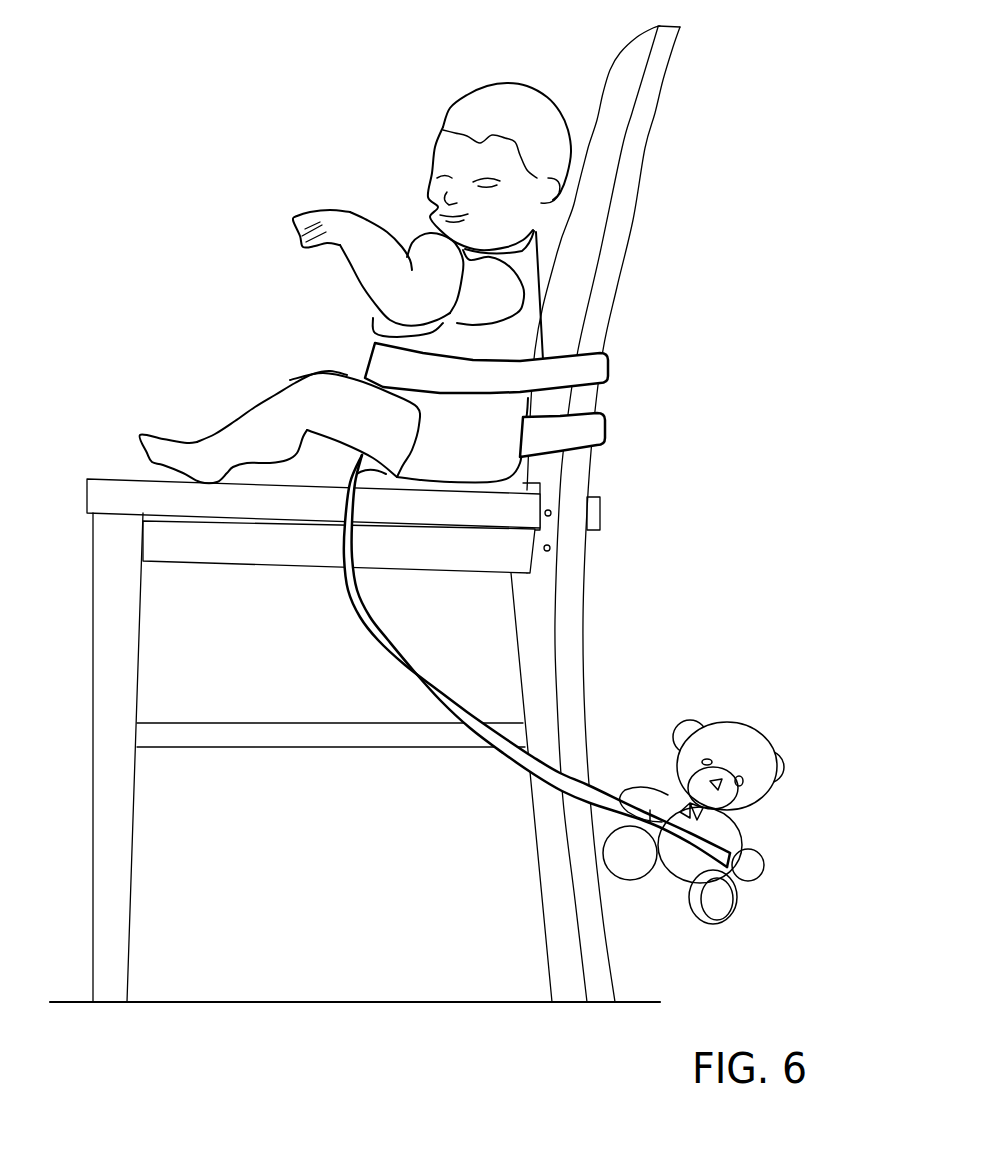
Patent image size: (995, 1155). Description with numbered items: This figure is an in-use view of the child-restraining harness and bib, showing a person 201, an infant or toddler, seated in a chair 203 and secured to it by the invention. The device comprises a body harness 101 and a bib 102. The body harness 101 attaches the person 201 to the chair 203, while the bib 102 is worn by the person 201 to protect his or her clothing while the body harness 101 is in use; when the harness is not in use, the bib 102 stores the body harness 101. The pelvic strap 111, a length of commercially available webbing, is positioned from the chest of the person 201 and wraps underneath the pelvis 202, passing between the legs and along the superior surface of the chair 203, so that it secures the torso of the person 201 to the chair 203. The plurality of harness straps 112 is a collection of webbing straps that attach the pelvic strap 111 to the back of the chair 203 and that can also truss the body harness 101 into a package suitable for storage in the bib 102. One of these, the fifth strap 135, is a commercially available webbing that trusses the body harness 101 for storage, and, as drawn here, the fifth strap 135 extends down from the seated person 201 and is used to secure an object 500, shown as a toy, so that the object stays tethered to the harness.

The body harness 101 is at (560, 340).
The bib 102 is at (420, 245).
The pelvic strap 111 is at (365, 362).
The plurality of harness straps 112 is at (587, 370).
The fifth strap 135 is at (527, 763).
The person 201 is at (505, 107).
The pelvis 202 is at (433, 440).
The chair 203 is at (389, 514).
The object 500 is at (737, 837).